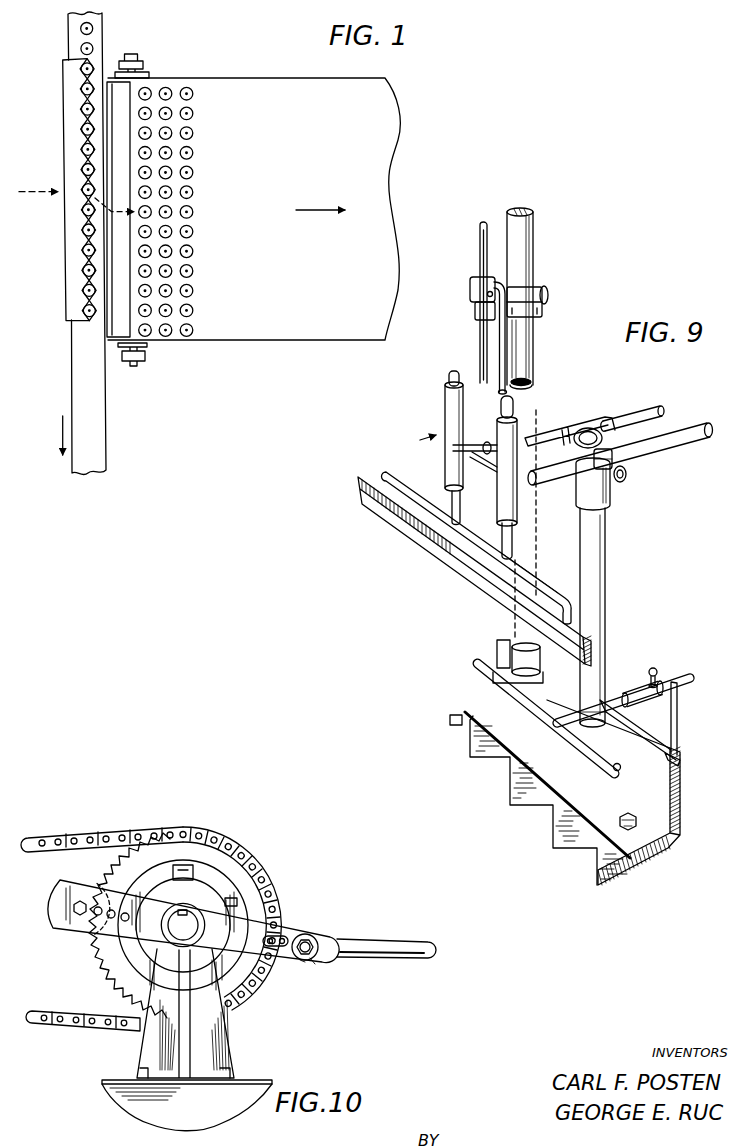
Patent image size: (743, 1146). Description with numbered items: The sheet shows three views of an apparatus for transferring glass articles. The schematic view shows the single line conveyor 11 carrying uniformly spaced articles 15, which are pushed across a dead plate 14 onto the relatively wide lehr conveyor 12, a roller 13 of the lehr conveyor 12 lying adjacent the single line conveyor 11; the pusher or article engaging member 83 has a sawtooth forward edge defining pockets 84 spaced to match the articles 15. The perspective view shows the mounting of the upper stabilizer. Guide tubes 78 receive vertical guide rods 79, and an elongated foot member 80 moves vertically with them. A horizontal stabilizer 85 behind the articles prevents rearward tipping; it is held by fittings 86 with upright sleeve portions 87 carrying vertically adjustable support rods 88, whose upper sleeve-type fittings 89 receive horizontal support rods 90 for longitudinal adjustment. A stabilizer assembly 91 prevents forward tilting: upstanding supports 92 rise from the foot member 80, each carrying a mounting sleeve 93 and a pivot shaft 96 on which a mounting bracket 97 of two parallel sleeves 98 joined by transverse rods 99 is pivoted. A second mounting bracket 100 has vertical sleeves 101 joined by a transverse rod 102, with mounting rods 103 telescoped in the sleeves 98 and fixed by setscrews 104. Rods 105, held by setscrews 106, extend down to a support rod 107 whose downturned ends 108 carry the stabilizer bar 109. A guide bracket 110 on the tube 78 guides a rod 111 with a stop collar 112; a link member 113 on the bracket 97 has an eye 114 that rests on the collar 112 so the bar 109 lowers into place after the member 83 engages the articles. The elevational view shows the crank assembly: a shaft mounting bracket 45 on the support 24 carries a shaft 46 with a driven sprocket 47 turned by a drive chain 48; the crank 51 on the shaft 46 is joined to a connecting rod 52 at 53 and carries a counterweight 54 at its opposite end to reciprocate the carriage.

In FIG. 1, the single line conveyor 11 is at (103, 432).
In FIG. 1, the lehr conveyor 12 is at (286, 327).
In FIG. 1, the roller 13 is at (148, 345).
In FIG. 1, the dead plate 14 is at (112, 338).
In FIG. 1, the articles 15 is at (81, 48).
In FIG. 1, the article engaging member 83 is at (72, 296).
In FIG. 9, the article engaging member 83 is at (657, 858).
In FIG. 9, the tubes 78 is at (533, 223).
In FIG. 9, the guide rods 79 is at (528, 353).
In FIG. 9, the foot member 80 is at (502, 650).
In FIG. 9, the pockets 84 is at (465, 738).
In FIG. 9, the stabilizer 85 is at (620, 767).
In FIG. 9, the fittings 86 is at (667, 738).
In FIG. 9, the sleeve portions 87 is at (681, 758).
In FIG. 9, the support rods 88 is at (679, 706).
In FIG. 9, the sleeve-type fittings 89 is at (658, 671).
In FIG. 9, the horizontal support rods 90 is at (624, 696).
In FIG. 9, the stabilizer assembly 91 is at (410, 566).
In FIG. 9, the upstanding supports 92 is at (601, 553).
In FIG. 9, the mounting sleeve 93 is at (608, 502).
In FIG. 9, the pivot shaft 96 is at (627, 478).
In FIG. 9, the mounting bracket 97 is at (630, 402).
In FIG. 9, the sleeves 98 is at (573, 420).
In FIG. 9, the transverse rods 99 is at (538, 448).
In FIG. 9, the second mounting bracket 100 is at (412, 440).
In FIG. 9, the sleeves 101 is at (446, 421).
In FIG. 9, the transverse rod 102 is at (462, 465).
In FIG. 9, the mounting rods 103 is at (483, 447).
In FIG. 9, the setscrews 104 is at (641, 451).
In FIG. 9, the rods 105 is at (505, 542).
In FIG. 9, the setscrews 106 is at (447, 404).
In FIG. 9, the support rod 107 is at (538, 577).
In FIG. 9, the downturned ends 108 is at (378, 477).
In FIG. 9, the stabilizer bar 109 is at (477, 581).
In FIG. 9, the guide bracket 110 is at (541, 303).
In FIG. 9, the rod 111 is at (479, 233).
In FIG. 9, the stop collar 112 is at (474, 298).
In FIG. 9, the link member 113 is at (499, 341).
In FIG. 9, the eye 114 is at (471, 286).
In FIG. 10, the support 24 is at (253, 1081).
In FIG. 10, the shaft mounting bracket 45 is at (211, 1033).
In FIG. 10, the shaft 46 is at (189, 924).
In FIG. 10, the driven sprocket 47 is at (260, 890).
In FIG. 10, the drive chain 48 is at (76, 1029).
In FIG. 10, the crank 51 is at (261, 982).
In FIG. 10, the connecting rod 52 is at (397, 943).
In FIG. 10, the connection 53 is at (307, 934).
In FIG. 10, the counterweight 54 is at (66, 944).